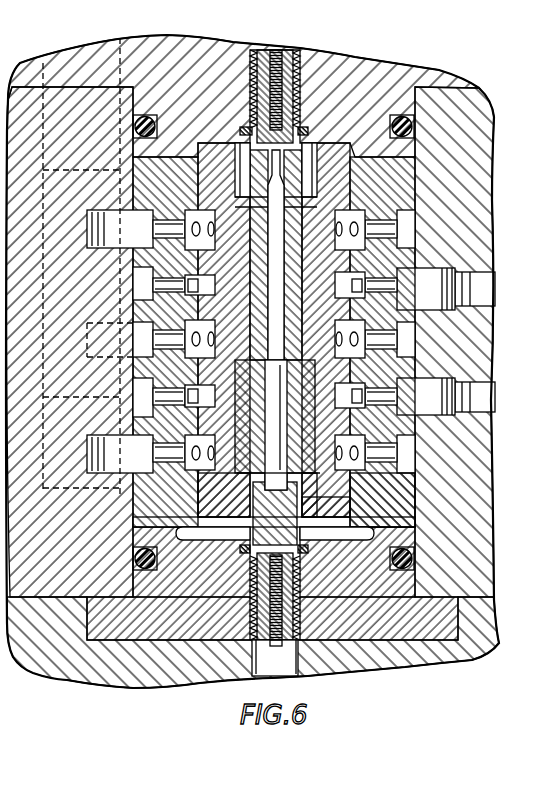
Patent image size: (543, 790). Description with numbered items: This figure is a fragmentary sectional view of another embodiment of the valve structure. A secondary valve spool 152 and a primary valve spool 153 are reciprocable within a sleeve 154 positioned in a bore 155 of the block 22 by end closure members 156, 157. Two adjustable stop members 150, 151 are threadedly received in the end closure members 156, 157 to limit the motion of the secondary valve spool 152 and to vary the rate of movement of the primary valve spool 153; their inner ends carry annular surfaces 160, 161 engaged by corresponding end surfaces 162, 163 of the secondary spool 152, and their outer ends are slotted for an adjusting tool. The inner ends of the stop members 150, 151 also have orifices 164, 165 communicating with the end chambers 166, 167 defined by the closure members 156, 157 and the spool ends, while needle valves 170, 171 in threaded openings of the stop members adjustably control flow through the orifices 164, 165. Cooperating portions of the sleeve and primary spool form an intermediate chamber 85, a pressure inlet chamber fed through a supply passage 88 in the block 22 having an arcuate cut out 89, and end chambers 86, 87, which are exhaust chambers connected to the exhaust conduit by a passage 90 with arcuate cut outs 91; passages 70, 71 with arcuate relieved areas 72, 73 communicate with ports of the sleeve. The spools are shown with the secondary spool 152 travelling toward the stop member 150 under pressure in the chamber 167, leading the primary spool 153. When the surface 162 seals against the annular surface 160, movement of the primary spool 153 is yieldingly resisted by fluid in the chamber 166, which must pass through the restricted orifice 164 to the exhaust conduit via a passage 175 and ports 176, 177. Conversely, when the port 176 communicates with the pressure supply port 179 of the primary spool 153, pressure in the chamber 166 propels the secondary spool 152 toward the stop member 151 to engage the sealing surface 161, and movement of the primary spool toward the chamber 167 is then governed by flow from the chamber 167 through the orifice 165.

The block 22 is at (3, 98).
The passage 70 is at (490, 263).
The passage 71 is at (492, 380).
The arcuate relieved area 72 is at (490, 320).
The arcuate relieved area 73 is at (494, 436).
The intermediate chamber 85 is at (354, 373).
The end chamber 86 is at (382, 342).
The end chamber 87 is at (359, 473).
The supply passage 88 is at (72, 266).
The arcuate cut out 89 is at (70, 328).
The passage 90 is at (68, 500).
The arcuate cut outs 91 is at (135, 222).
The adjustable stop member 150 is at (305, 568).
The adjustable stop member 151 is at (305, 63).
The secondary valve spool 152 is at (182, 342).
The primary valve spool 153 is at (203, 547).
The sleeve 154 is at (133, 545).
The bore 155 is at (132, 516).
The end closure member 156 is at (430, 633).
The end closure member 157 is at (394, 73).
The annular surface 160 is at (309, 497).
The annular surface 161 is at (308, 202).
The end surface 162 is at (309, 475).
The end surface 163 is at (250, 205).
The orifice 164 is at (281, 427).
The orifice 165 is at (273, 207).
The end chamber 166 is at (234, 533).
The end chamber 167 is at (312, 138).
The needle valve 170 is at (297, 664).
The needle valve 171 is at (272, 52).
The passage 175 is at (250, 490).
The port 176 is at (290, 367).
The port 177 is at (349, 419).
The pressure supply port 179 is at (349, 318).